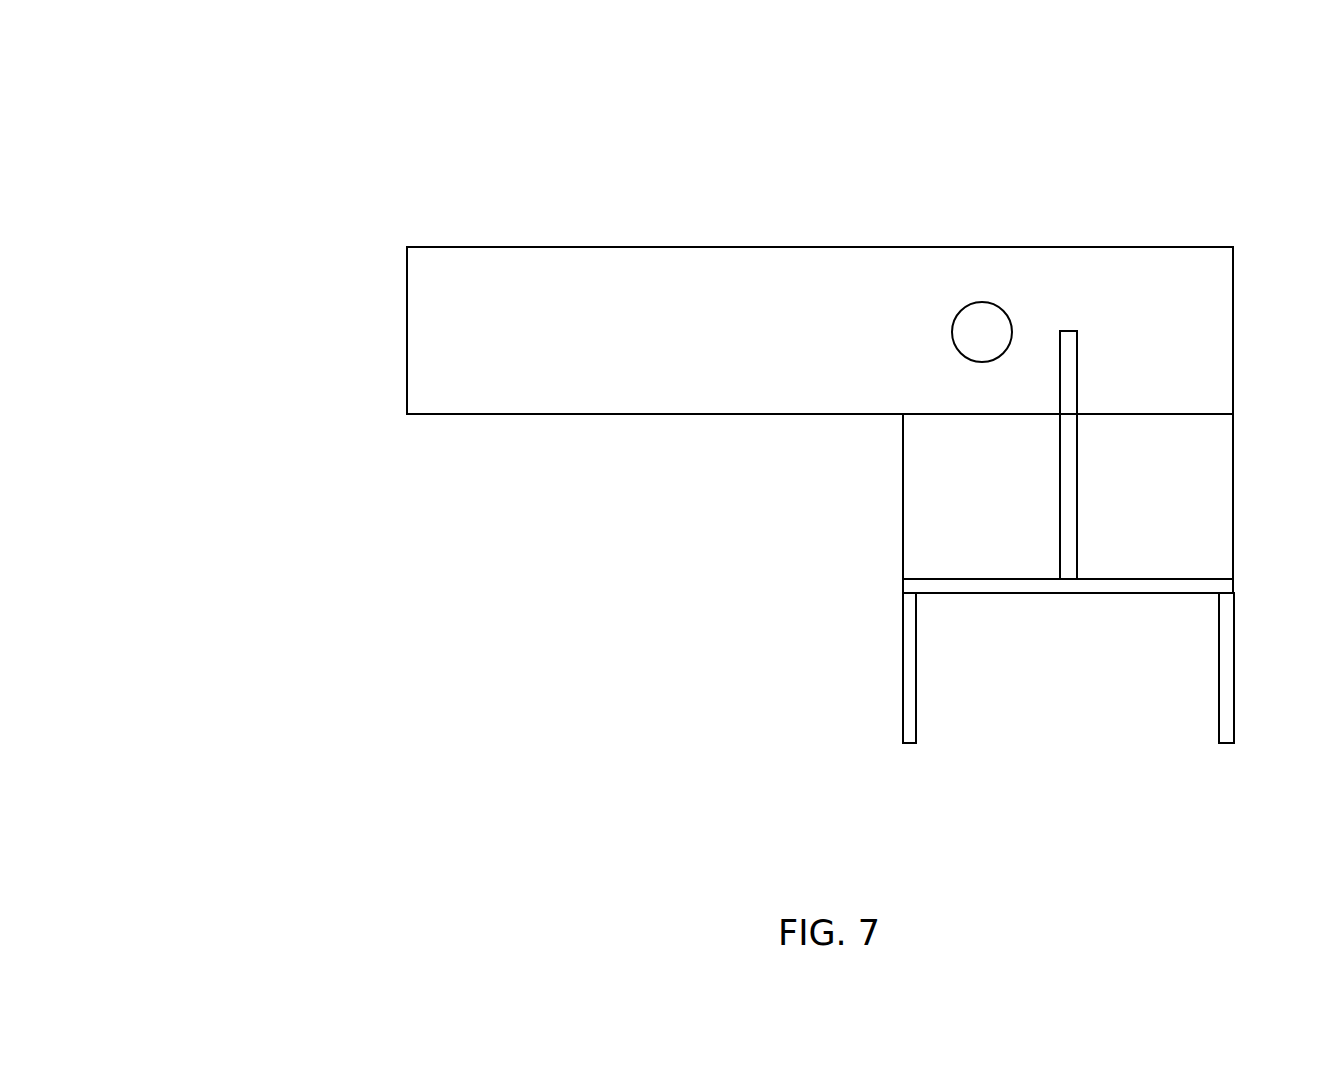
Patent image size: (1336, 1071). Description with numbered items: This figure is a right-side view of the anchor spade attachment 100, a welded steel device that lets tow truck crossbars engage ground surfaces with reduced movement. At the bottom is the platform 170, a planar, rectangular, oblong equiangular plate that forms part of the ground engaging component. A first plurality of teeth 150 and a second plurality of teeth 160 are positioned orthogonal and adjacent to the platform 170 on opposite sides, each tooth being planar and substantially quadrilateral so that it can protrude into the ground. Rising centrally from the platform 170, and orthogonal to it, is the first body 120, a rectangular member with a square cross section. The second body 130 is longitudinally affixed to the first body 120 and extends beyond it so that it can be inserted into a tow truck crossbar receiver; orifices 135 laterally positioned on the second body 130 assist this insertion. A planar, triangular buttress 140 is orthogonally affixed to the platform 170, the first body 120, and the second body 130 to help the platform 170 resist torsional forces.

The anchor spade attachment 100 is at (231, 130).
The first body 120 is at (1175, 515).
The second body 130 is at (617, 325).
The orifices 135 is at (951, 331).
The buttresses 140 is at (1059, 486).
The first plurality of teeth 150 is at (1234, 622).
The second plurality of teeth 160 is at (903, 627).
The platform 170 is at (1032, 594).